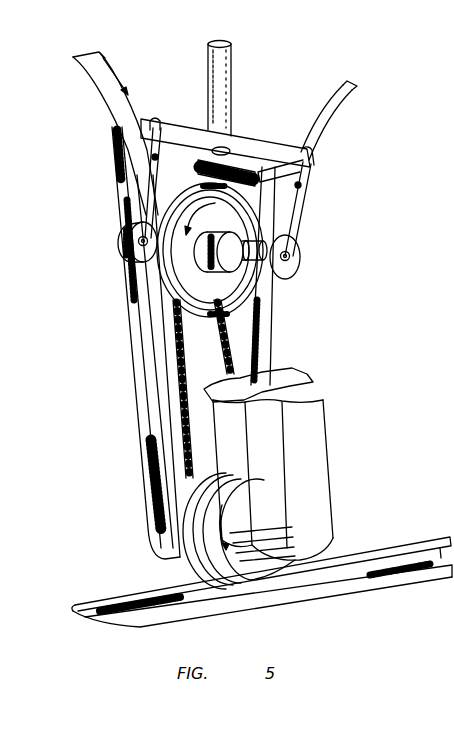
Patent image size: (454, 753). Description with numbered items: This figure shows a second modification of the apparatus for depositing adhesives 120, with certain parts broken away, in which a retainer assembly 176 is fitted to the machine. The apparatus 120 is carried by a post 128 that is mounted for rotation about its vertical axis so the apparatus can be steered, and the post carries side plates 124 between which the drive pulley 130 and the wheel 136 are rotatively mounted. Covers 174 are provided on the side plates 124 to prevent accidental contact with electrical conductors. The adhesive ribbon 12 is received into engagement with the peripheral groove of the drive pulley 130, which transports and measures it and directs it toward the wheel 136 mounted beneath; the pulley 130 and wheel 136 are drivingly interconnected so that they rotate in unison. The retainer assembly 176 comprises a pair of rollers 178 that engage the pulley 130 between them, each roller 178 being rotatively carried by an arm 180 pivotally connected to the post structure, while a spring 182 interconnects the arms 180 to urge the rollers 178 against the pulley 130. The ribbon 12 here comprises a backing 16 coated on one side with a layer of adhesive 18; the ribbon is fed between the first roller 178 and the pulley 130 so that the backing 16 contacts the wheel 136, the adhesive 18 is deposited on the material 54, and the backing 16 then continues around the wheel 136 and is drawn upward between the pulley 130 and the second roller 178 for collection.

The adhesive ribbon 12 is at (102, 91).
The backing 16 is at (340, 101).
The layer of adhesive 18 is at (427, 548).
The material 54 is at (412, 577).
The apparatus for depositing adhesives 120 is at (336, 304).
The side plates 124 is at (292, 387).
The post 128 is at (222, 77).
The drive pulley 130 is at (255, 296).
The wheel 136 is at (250, 566).
The covers 174 is at (308, 446).
The retainer assembly 176 is at (331, 196).
The rollers 178 is at (118, 248).
The arm 180 is at (148, 201).
The spring 182 is at (247, 167).